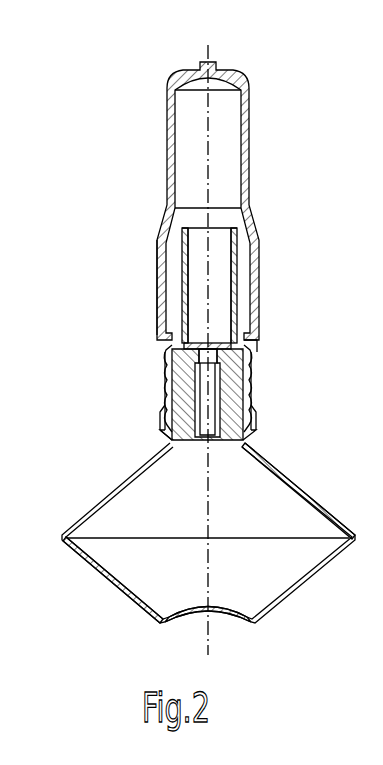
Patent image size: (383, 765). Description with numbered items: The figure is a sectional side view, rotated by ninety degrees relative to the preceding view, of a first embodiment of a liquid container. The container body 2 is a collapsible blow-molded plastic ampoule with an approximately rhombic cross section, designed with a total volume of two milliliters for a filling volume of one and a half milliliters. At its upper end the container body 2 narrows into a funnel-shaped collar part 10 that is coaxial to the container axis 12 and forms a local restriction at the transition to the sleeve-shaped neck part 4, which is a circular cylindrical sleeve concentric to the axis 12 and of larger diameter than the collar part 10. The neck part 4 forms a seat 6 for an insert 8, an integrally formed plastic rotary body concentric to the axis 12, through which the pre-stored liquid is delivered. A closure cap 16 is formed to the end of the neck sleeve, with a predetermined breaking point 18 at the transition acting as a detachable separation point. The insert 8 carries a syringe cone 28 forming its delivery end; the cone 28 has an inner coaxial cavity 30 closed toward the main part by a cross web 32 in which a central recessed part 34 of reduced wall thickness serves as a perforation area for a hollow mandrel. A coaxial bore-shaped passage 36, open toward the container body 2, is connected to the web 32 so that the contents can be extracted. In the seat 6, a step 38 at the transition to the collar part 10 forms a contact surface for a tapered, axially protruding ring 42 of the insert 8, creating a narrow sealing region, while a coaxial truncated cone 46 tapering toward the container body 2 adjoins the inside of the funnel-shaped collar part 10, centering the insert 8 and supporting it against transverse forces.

The container body 2 is at (116, 583).
The neck part 4 is at (166, 390).
The seat 6 is at (165, 407).
The insert 8 is at (236, 383).
The collar part 10 is at (170, 438).
The container axis 12 is at (222, 647).
The closure cap 16 is at (255, 265).
The predetermined breaking point 18 is at (168, 347).
The syringe cone 28 is at (186, 267).
The cavity 30 is at (234, 290).
The cross web 32 is at (257, 358).
The recessed part 34 is at (203, 338).
The passage 36 is at (216, 409).
The step 38 is at (256, 414).
The ring 42 is at (168, 421).
The truncated cone 46 is at (247, 430).